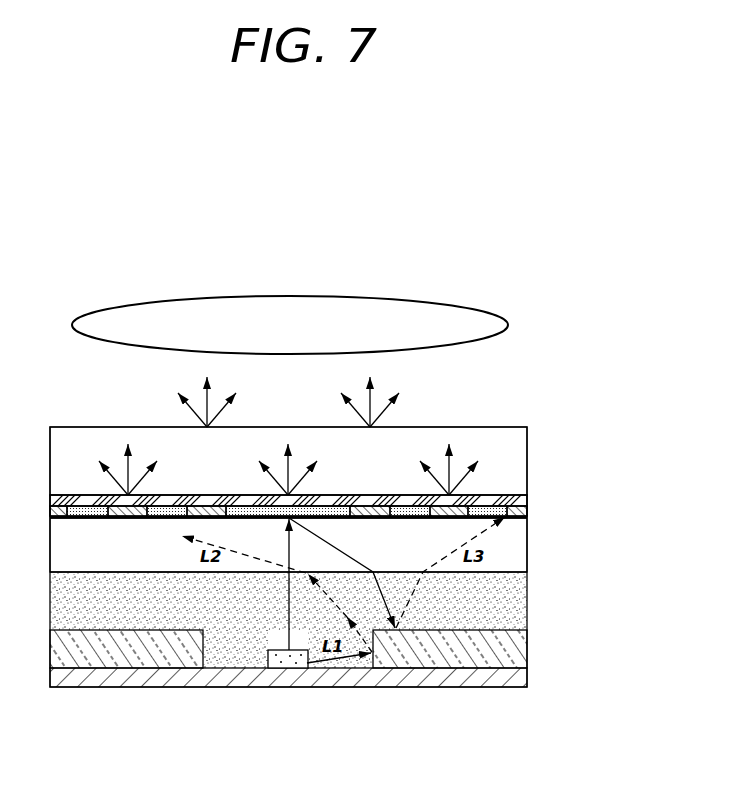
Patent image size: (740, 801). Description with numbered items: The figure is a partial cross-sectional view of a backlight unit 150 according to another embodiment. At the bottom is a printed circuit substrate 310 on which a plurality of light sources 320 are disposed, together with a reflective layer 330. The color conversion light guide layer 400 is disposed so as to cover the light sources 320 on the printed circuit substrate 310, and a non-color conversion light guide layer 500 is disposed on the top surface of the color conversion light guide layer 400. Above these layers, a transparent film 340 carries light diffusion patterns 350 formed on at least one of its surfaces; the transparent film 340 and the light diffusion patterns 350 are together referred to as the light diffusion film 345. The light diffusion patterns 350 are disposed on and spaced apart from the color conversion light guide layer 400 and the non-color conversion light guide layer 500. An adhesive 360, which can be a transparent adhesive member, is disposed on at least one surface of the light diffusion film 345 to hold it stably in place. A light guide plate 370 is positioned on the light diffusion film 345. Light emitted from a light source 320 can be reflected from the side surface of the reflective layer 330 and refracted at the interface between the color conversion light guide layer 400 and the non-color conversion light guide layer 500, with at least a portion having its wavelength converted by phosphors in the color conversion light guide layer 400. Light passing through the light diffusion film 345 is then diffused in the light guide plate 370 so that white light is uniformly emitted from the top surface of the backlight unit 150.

The backlight unit 150 is at (88, 268).
The light guide plate 370 is at (528, 462).
The transparent film 340 is at (528, 500).
The adhesive 360 is at (528, 510).
The light diffusion patterns 350 is at (528, 517).
The light diffusion film 345 is at (593, 547).
The non-color conversion light guide layer 500 is at (528, 565).
The color conversion light guide layer 400 is at (528, 605).
The reflective layer 330 is at (528, 643).
The printed circuit substrate 310 is at (528, 678).
The light sources 320 is at (288, 662).